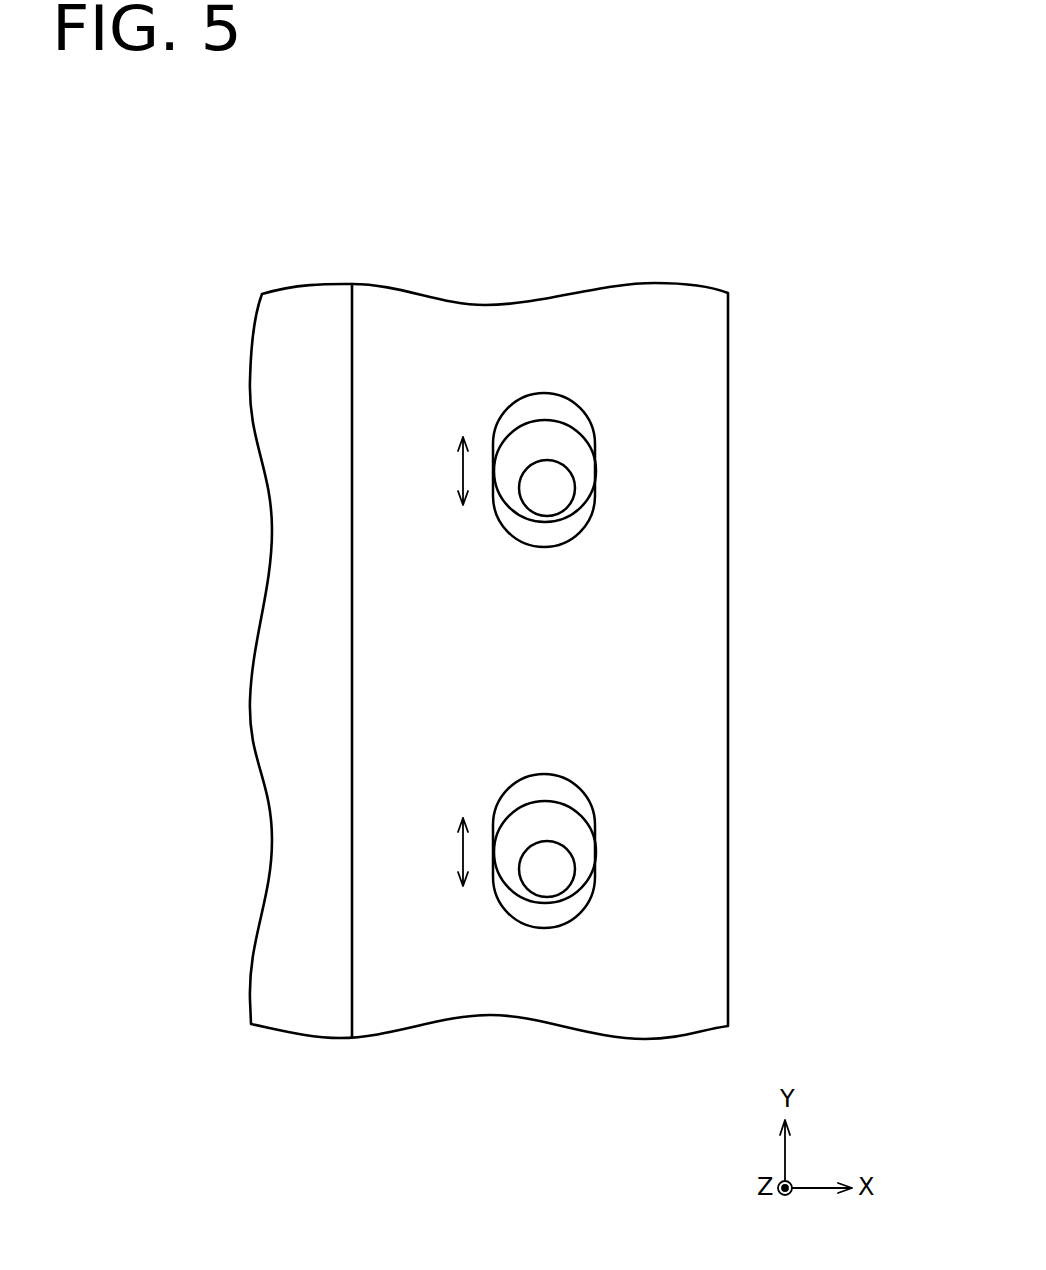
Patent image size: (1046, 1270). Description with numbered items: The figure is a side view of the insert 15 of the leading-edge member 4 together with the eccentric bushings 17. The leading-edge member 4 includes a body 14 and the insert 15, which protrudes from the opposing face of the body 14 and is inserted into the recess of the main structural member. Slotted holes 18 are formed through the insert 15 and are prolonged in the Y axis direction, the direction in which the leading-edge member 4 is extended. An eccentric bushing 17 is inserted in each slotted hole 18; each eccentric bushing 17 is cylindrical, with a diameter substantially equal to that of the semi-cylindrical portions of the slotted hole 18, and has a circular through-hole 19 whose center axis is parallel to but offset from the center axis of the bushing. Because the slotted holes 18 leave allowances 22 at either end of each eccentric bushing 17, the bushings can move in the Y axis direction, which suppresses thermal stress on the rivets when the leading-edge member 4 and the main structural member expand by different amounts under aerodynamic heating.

The leading-edge member 4 is at (526, 586).
The body 14 is at (291, 305).
The insert 15 is at (717, 346).
The eccentric bushing 17 is at (583, 483).
The slotted hole 18 is at (573, 393).
The through-hole 19 is at (568, 474).
The allowance 22 is at (517, 415).